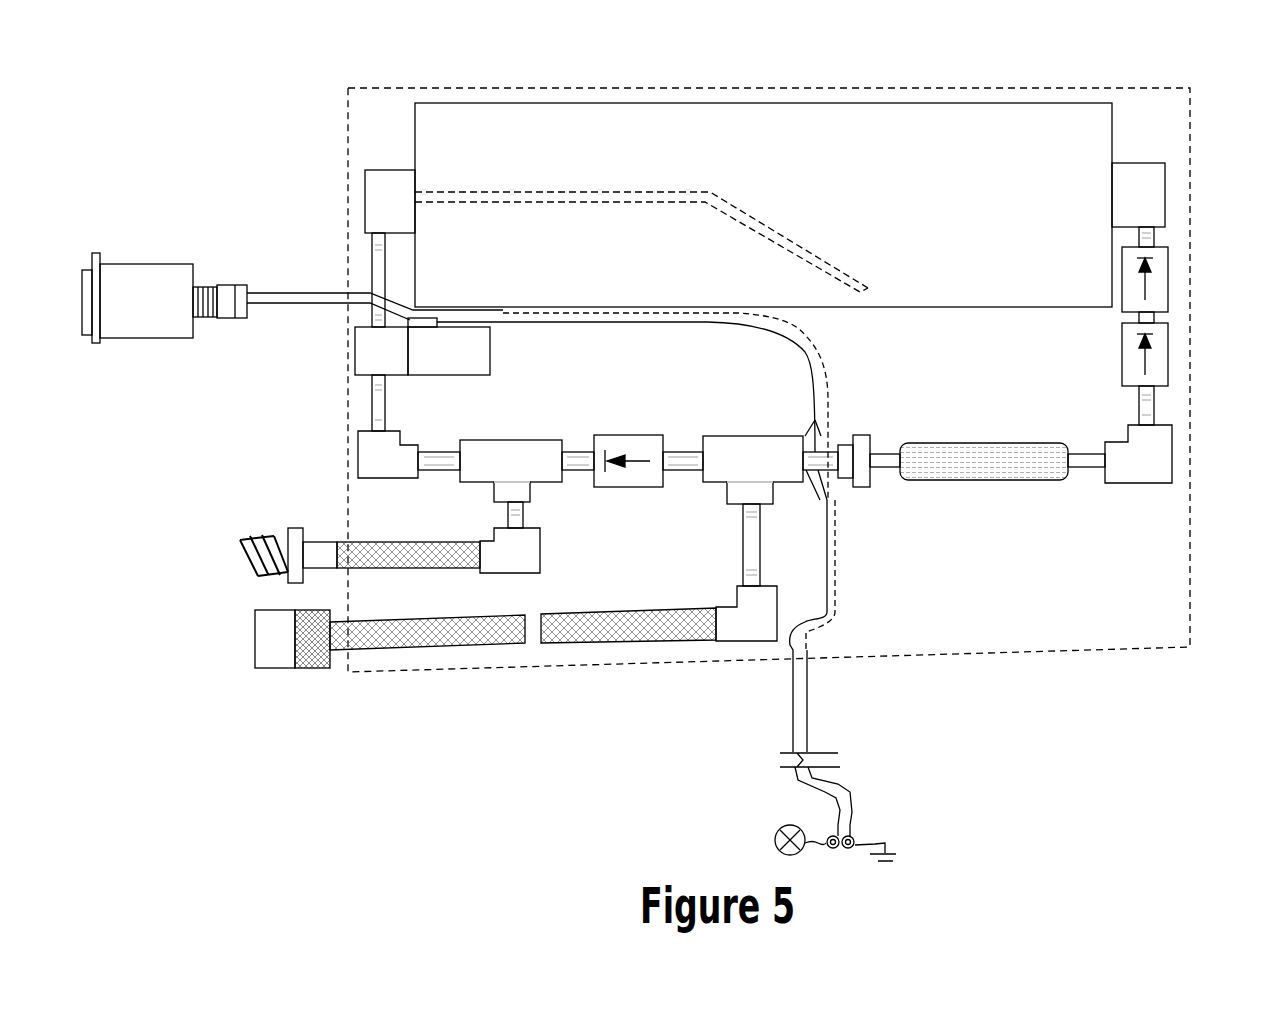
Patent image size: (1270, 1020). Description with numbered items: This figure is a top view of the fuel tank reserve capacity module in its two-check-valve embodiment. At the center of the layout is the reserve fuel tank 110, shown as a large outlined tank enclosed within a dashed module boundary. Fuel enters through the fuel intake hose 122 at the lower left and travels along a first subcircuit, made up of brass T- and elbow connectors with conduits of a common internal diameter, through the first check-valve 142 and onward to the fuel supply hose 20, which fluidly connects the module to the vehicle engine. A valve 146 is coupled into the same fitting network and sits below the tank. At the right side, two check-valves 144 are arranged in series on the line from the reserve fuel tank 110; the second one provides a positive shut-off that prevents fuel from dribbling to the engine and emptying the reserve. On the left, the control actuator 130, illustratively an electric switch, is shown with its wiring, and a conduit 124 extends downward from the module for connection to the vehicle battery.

The reserve fuel tank 110 is at (745, 100).
The check-valve 144 is at (1172, 348).
The first check-valve 142 is at (632, 430).
The valve 146 is at (350, 351).
The fuel supply hose 20 is at (320, 538).
The fuel intake hose 122 is at (364, 652).
The control actuator 130 is at (147, 260).
The conduit 124 is at (854, 800).